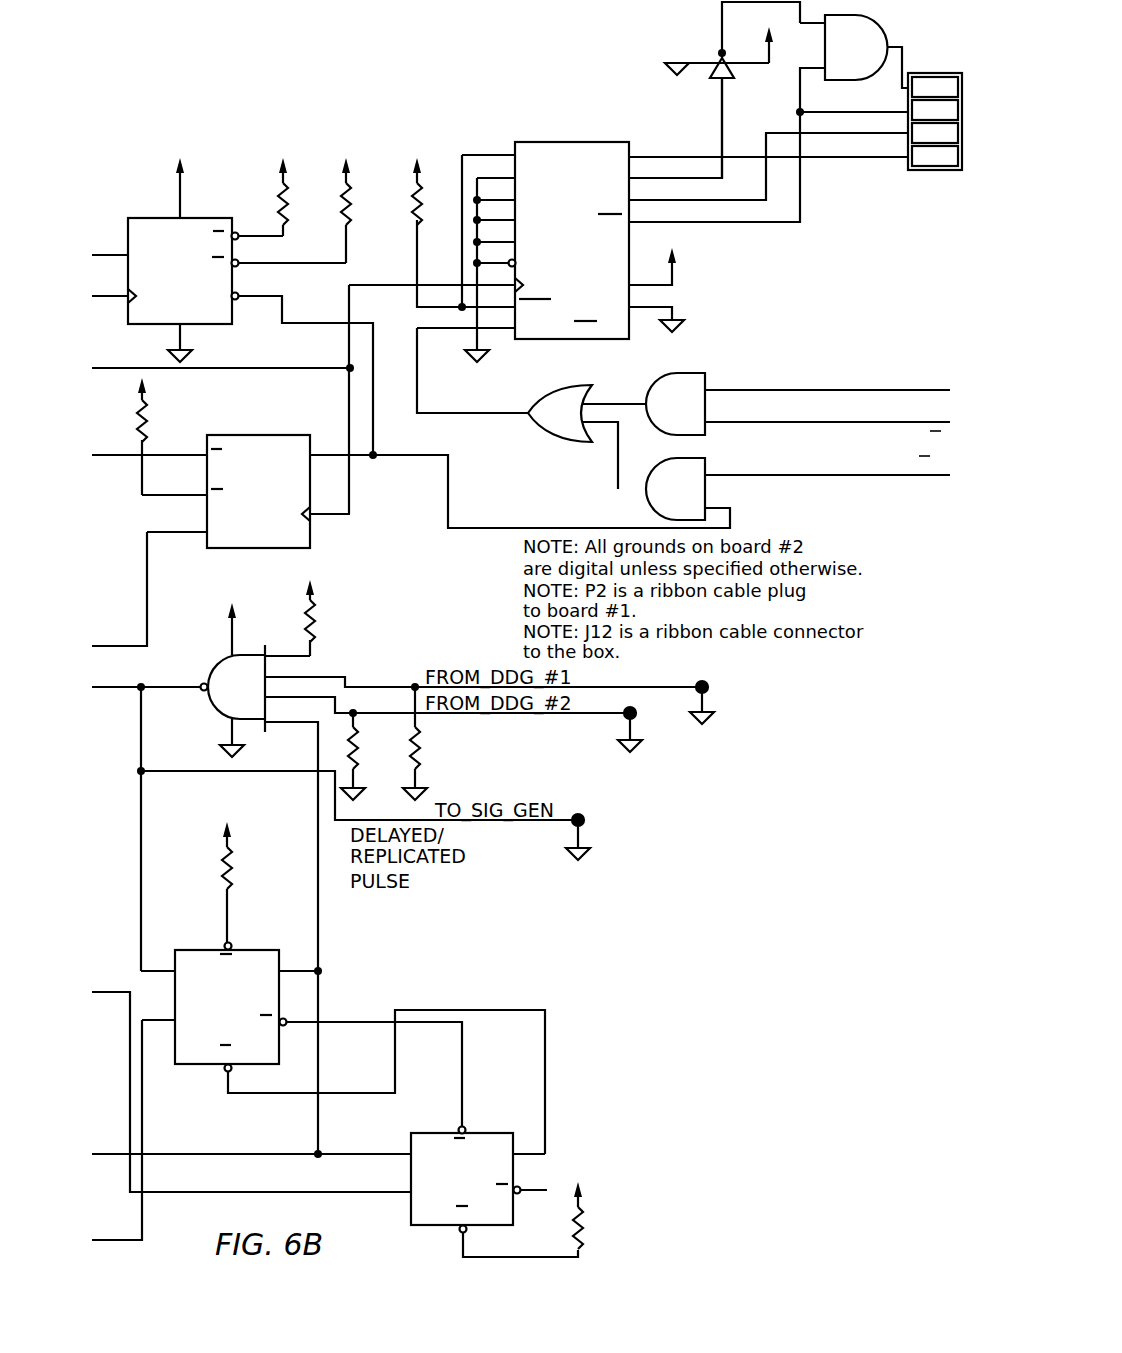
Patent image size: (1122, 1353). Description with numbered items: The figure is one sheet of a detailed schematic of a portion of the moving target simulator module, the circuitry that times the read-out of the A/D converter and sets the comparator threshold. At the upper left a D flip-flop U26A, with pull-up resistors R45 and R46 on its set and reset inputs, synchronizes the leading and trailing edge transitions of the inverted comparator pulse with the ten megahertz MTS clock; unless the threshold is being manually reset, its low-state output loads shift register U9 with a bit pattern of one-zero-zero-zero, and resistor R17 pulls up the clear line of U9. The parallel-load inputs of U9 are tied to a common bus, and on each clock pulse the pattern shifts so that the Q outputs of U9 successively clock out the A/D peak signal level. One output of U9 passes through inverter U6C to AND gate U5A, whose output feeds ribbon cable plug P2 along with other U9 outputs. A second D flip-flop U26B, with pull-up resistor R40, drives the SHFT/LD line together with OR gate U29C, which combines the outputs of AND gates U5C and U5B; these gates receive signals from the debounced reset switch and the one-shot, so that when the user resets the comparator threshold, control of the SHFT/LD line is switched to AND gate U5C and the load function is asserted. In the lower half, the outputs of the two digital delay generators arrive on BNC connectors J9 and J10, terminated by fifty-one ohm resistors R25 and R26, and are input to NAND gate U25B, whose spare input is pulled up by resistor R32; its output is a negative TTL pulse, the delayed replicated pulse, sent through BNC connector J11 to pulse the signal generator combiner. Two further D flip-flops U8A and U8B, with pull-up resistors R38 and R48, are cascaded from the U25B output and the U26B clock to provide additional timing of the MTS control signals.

The D flip-flop U26A is at (176, 254).
The D flip-flop U26B is at (232, 529).
The shift register U9 is at (602, 242).
The inverter U6C is at (731, 90).
The AND gate U5A is at (857, 59).
The AND gate U5B is at (661, 490).
The AND gate U5C is at (798, 401).
The OR gate U29C is at (574, 427).
The NAND gate U25B is at (397, 878).
The D flip-flop U8A is at (318, 1083).
The D flip-flop U8B is at (335, 1180).
The ribbon cable plug P2 is at (935, 109).
The resistor R17 is at (445, 221).
The resistor R45 is at (288, 192).
The resistor R46 is at (351, 205).
The resistor R40 is at (146, 432).
The resistor R32 is at (315, 615).
The resistor R25 is at (359, 756).
The resistor R26 is at (422, 743).
The resistor R38 is at (229, 881).
The resistor R48 is at (588, 1213).
The BNC connector J9 is at (711, 701).
The BNC connector J10 is at (621, 722).
The BNC connector J11 is at (586, 836).